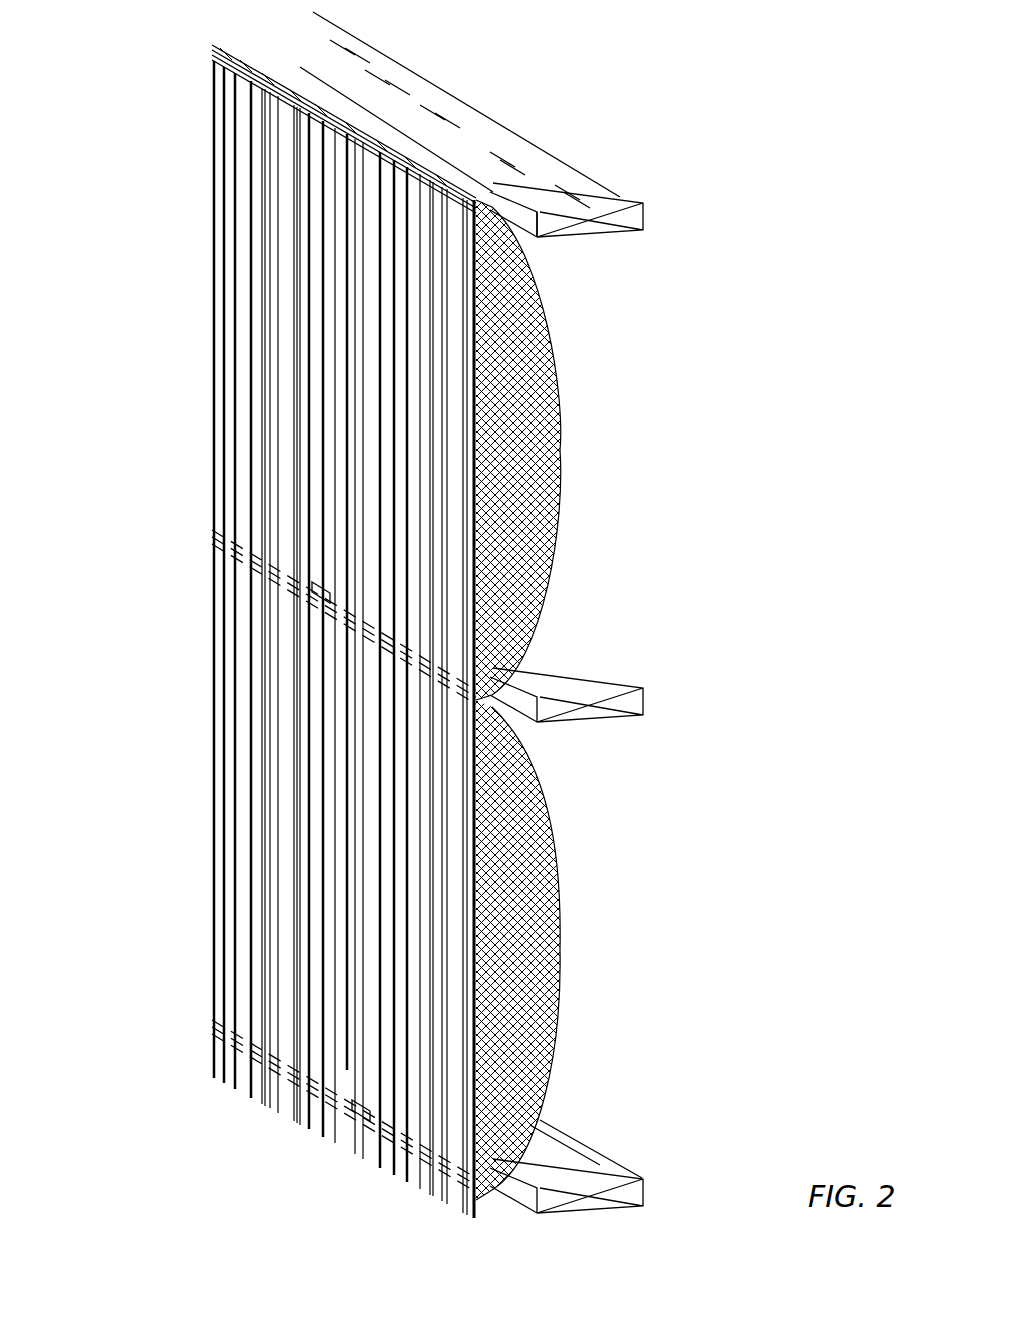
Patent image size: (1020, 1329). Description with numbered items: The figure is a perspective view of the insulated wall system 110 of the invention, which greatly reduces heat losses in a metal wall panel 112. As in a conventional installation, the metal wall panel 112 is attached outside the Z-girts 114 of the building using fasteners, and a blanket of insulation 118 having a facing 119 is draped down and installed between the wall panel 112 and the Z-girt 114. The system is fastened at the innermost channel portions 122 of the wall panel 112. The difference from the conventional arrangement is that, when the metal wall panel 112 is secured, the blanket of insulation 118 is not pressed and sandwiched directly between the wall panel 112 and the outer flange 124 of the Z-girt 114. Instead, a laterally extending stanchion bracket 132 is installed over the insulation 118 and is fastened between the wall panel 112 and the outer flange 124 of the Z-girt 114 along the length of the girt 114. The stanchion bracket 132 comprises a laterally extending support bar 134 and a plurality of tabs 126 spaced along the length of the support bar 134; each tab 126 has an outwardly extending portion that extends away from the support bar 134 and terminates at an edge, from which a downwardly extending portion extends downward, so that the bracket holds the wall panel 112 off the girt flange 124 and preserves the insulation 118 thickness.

The insulated wall system 110 is at (168, 901).
The metal wall panel 112 is at (216, 920).
The Z-girt 114 is at (497, 135).
The blanket of insulation 118 is at (532, 428).
The facing 119 is at (555, 503).
The innermost channel portions 122 is at (292, 1113).
The outer flange 124 is at (540, 226).
The tabs 126 is at (232, 51).
The stanchion bracket 132 is at (505, 212).
The support bar 134 is at (352, 625).